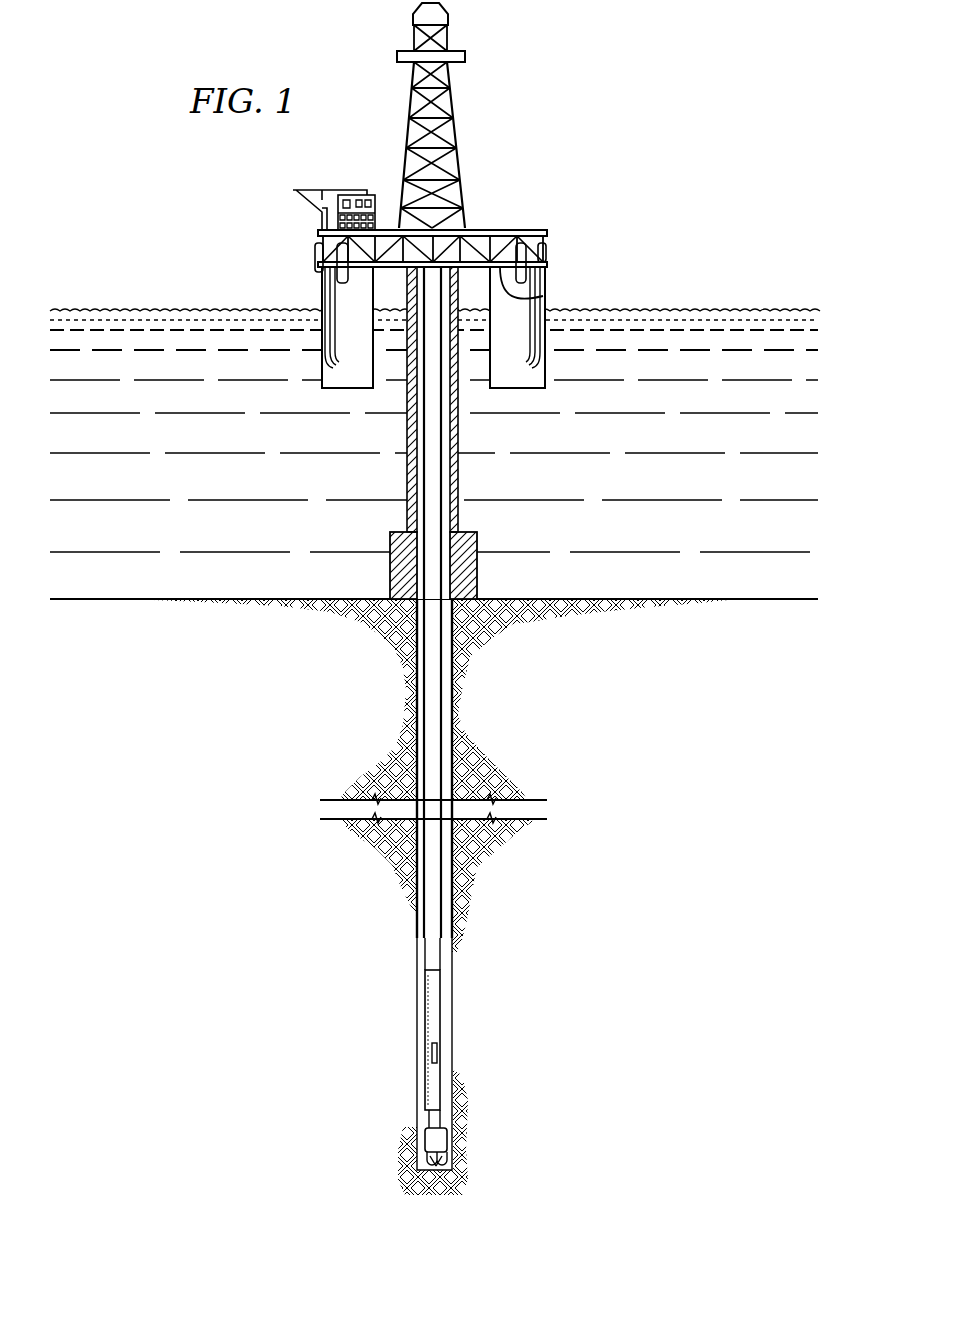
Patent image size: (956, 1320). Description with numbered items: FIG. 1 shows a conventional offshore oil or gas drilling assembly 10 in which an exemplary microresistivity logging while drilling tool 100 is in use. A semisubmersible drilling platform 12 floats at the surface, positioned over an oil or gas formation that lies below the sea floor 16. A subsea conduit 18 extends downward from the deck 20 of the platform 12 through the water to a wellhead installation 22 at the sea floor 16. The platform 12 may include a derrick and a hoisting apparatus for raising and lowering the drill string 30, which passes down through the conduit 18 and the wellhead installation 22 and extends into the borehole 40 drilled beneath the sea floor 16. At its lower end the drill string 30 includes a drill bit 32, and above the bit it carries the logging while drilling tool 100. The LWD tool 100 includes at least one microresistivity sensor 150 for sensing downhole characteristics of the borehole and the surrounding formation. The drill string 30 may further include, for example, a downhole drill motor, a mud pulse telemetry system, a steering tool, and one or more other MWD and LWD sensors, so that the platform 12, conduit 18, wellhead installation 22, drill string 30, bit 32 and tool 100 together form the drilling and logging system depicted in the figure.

The offshore oil or gas drilling assembly 10 is at (527, 124).
The semisubmersible drilling platform 12 is at (535, 231).
The sea floor 16 is at (688, 598).
The subsea conduit 18 is at (460, 476).
The deck 20 is at (543, 293).
The wellhead installation 22 is at (468, 526).
The drill string 30 is at (436, 417).
The drill bit 32 is at (455, 1162).
The borehole 40 is at (445, 712).
The microresistivity logging while drilling tool 100 is at (424, 994).
The microresistivity sensor 150 is at (432, 1052).